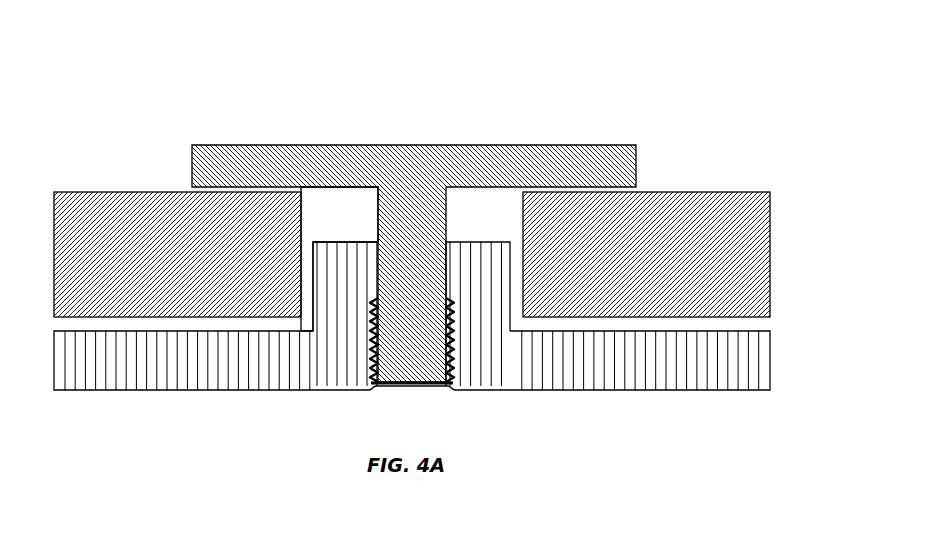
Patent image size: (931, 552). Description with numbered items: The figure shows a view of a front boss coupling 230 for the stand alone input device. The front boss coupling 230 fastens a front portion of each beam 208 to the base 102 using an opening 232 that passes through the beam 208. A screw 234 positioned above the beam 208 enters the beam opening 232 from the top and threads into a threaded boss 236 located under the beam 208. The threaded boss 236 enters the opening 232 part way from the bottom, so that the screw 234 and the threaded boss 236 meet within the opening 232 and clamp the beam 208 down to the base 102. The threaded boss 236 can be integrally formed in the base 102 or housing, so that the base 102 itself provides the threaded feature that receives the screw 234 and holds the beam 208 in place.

The front boss coupling 230 is at (508, 68).
The screw 234 is at (625, 161).
The opening 232 is at (334, 222).
The threaded boss 236 is at (481, 258).
The beam 208 is at (756, 259).
The base 102 is at (713, 391).